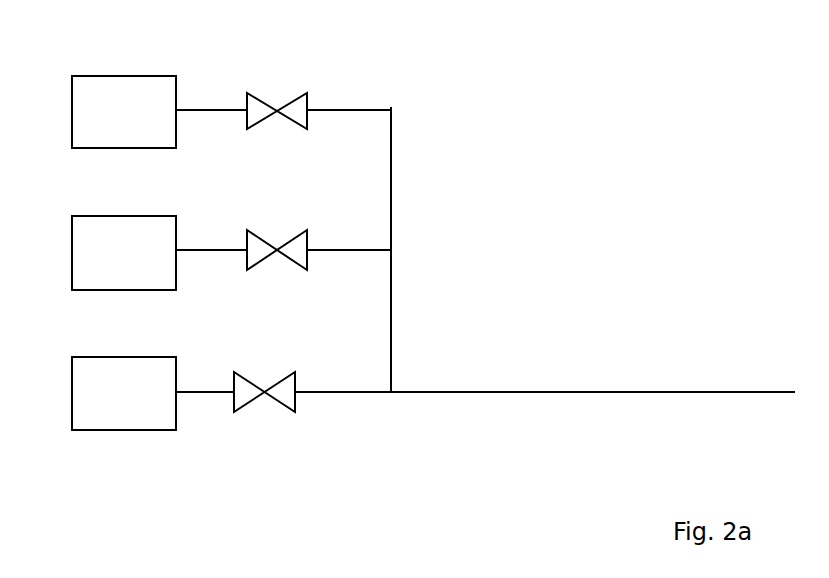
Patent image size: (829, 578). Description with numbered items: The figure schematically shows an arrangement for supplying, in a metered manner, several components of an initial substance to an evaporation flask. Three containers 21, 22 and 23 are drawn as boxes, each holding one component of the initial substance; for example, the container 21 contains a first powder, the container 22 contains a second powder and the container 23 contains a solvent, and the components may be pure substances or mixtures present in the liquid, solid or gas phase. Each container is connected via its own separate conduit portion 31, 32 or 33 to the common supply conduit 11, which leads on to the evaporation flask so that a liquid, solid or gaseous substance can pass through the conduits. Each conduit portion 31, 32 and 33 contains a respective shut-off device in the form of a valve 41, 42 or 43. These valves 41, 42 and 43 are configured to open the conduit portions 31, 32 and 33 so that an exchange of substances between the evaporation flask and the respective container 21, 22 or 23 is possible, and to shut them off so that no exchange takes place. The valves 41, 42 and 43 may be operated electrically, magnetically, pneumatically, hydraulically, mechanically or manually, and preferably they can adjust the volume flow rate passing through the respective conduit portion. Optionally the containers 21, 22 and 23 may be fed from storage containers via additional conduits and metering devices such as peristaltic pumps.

The common supply conduit 11 is at (585, 385).
The container 21 is at (90, 107).
The container 22 is at (85, 250).
The container 23 is at (107, 408).
The conduit portion 31 is at (354, 107).
The conduit portion 32 is at (339, 248).
The conduit portion 33 is at (352, 394).
The valve 41 is at (279, 107).
The valve 42 is at (275, 238).
The valve 43 is at (271, 381).